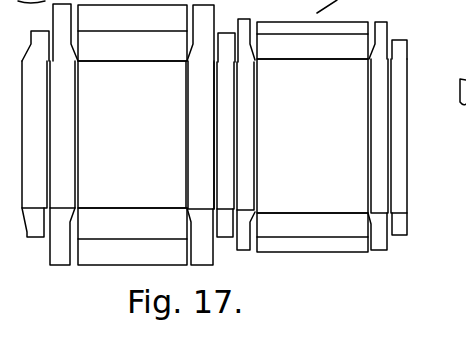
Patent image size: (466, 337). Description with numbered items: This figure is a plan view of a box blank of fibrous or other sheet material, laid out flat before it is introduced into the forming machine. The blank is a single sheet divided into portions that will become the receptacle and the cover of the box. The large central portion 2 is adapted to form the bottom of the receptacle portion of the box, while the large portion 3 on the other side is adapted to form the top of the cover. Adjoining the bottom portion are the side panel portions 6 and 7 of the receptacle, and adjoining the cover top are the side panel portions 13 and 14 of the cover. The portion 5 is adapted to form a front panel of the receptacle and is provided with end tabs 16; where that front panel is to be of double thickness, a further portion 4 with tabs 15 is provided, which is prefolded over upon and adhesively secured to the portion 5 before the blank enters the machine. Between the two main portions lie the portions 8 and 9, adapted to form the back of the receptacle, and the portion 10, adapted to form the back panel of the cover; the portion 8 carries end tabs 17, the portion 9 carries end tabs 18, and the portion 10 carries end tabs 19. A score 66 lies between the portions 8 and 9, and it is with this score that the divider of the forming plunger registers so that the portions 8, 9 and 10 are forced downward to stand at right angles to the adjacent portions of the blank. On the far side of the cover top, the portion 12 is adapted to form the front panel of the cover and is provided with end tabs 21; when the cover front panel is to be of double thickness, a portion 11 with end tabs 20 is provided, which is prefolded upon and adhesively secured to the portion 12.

The bottom portion 2 is at (132, 134).
The cover top portion 3 is at (312, 136).
The double-thickness front panel portion 4 is at (34, 134).
The receptacle front panel portion 5 is at (62, 134).
The receptacle side panel portion 6 is at (132, 135).
The receptacle side panel portion 7 is at (132, 135).
The receptacle back portion 8 is at (201, 135).
The receptacle back portion 9 is at (225, 135).
The cover back panel portion 10 is at (245, 136).
The double-thickness cover front panel portion 11 is at (399, 136).
The cover front panel portion 12 is at (379, 136).
The cover side panel portion 13 is at (312, 136).
The cover side panel portion 14 is at (312, 135).
The tabs 15 is at (35, 134).
The end tabs 16 is at (64, 134).
The end tabs 17 is at (200, 135).
The end tabs 18 is at (226, 135).
The end tabs 19 is at (245, 134).
The end tabs 20 is at (407, 50).
The end tabs 21 is at (388, 30).
The score 66 is at (214, 96).